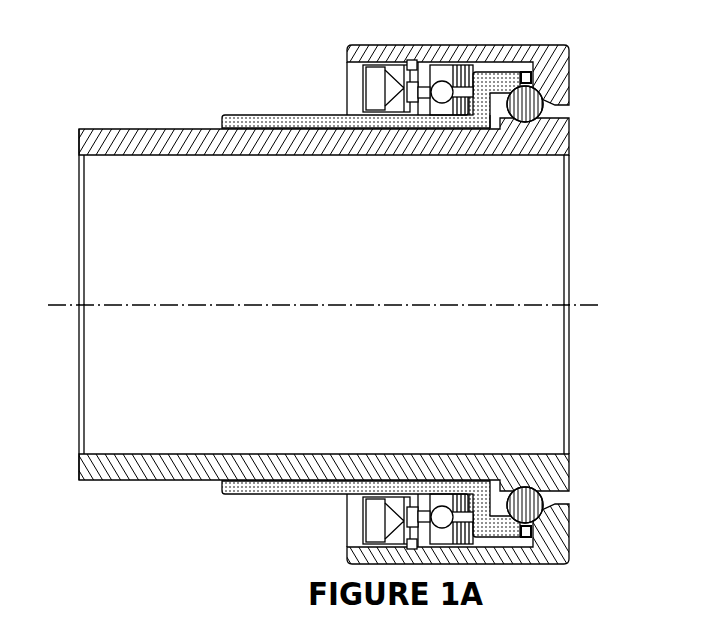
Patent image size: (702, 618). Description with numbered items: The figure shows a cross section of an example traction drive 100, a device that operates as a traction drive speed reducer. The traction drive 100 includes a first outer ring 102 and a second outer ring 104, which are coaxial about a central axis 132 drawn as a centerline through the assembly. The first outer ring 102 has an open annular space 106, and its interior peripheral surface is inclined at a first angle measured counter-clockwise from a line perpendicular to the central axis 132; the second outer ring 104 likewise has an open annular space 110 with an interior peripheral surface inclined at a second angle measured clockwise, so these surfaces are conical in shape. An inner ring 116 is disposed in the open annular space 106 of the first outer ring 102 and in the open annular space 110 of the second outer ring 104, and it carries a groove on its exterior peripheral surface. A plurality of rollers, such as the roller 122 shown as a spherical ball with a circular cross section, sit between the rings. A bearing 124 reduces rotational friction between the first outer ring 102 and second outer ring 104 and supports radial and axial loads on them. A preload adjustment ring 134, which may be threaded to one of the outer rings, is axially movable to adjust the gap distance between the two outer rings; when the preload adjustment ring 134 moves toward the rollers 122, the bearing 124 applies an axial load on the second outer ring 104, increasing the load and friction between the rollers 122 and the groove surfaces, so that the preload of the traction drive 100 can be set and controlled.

The traction drive 100 is at (108, 91).
The first outer ring 102 is at (545, 73).
The second outer ring 104 is at (493, 83).
The open annular space 106 is at (583, 110).
The open annular space 110 is at (495, 128).
The inner ring 116 is at (548, 137).
The roller 122 is at (520, 107).
The bearing 124 is at (440, 82).
The central axis 132 is at (68, 304).
The preload adjustment ring 134 is at (372, 93).